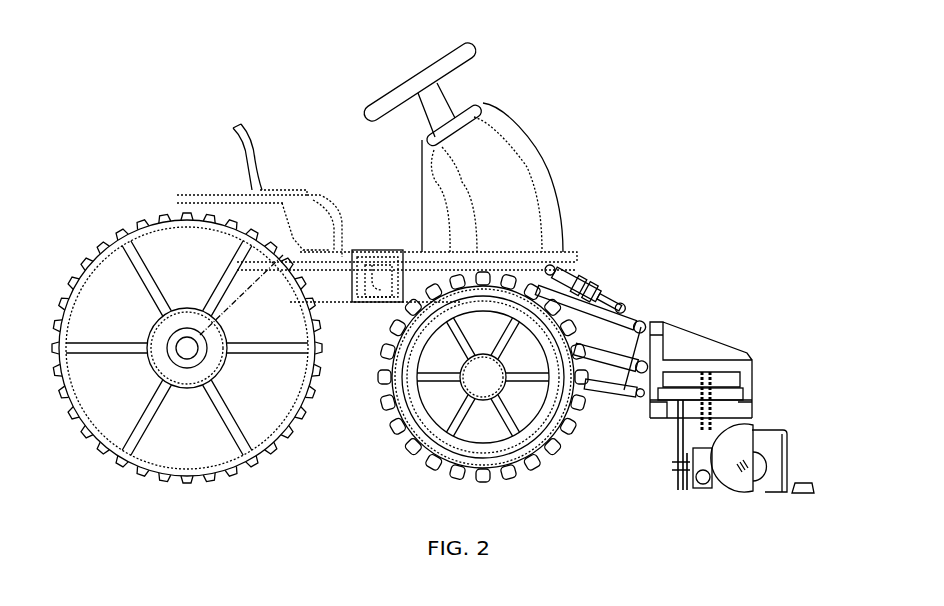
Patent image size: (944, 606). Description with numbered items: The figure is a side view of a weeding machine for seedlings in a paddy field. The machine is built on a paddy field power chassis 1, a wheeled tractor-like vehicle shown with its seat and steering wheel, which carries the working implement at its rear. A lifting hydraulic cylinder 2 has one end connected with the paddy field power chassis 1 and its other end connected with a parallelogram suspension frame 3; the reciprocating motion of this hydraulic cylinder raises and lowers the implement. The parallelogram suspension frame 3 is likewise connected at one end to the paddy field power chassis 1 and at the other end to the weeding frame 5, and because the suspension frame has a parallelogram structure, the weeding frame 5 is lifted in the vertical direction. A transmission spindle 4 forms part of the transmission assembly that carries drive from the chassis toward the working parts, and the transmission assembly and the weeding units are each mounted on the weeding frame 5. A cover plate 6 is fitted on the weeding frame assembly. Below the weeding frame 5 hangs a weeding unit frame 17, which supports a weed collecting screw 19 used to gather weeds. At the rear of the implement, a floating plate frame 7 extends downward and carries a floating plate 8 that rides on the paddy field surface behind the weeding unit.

The paddy field power chassis 1 is at (551, 265).
The lifting hydraulic cylinder 2 is at (593, 285).
The parallelogram suspension frame 3 is at (628, 305).
The transmission spindle 4 is at (650, 325).
The weeding frame 5 is at (741, 353).
The cover plate 6 is at (752, 392).
The weeding unit frame 17 is at (752, 423).
The weed collecting screw 19 is at (754, 452).
The floating plate frame 7 is at (784, 436).
The floating plate 8 is at (803, 485).